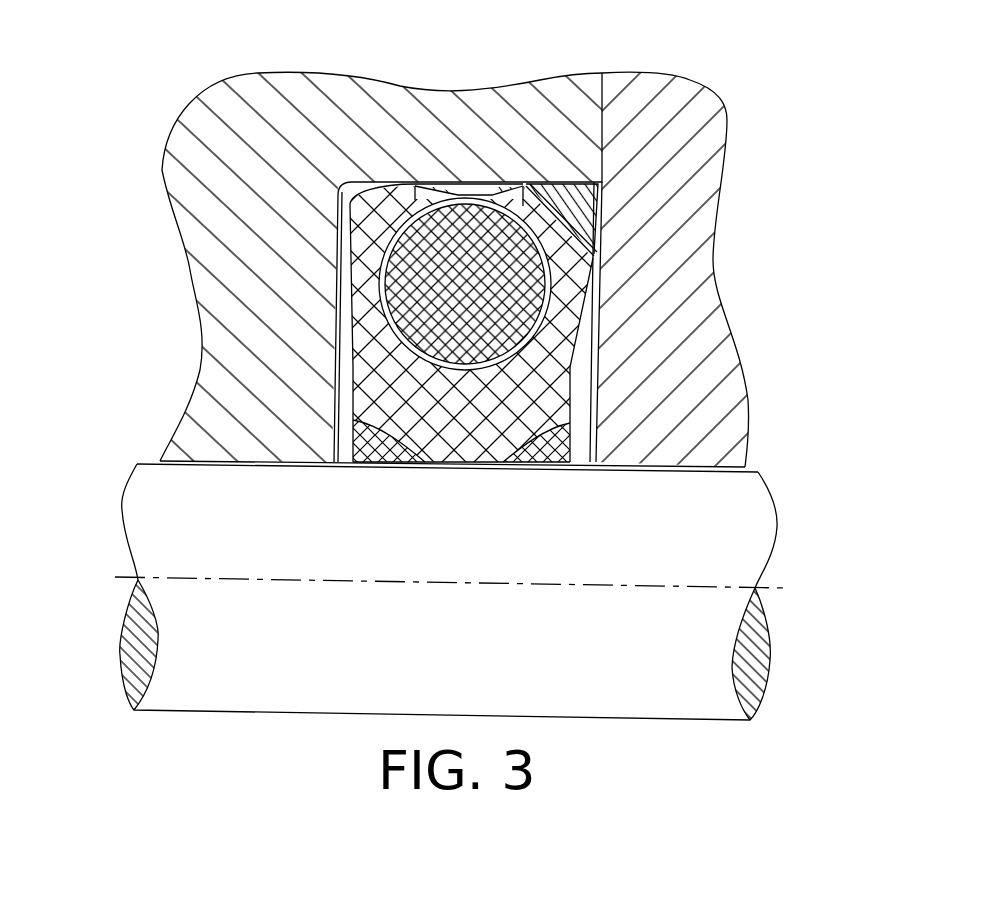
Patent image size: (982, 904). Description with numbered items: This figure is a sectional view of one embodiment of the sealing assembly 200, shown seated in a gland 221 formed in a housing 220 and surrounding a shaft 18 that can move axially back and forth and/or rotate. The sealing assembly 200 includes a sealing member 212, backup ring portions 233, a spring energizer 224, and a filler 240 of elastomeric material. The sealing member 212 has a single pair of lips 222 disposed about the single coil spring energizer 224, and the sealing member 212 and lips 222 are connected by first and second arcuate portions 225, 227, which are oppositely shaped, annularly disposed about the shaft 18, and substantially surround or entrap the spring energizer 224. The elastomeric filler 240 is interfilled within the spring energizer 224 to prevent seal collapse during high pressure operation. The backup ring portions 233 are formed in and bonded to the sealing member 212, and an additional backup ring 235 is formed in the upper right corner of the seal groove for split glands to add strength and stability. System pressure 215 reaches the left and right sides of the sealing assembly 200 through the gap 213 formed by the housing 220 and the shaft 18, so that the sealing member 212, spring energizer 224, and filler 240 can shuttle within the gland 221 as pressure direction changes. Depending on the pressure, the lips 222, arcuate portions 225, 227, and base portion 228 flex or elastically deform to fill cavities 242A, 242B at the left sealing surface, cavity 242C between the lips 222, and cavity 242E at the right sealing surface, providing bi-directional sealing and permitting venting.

The shaft 18 is at (713, 617).
The sealing assembly 200 is at (469, 329).
The sealing member 212 is at (458, 437).
The gap 213 is at (103, 463).
The system pressure 215 is at (115, 461).
The housing 220 is at (722, 357).
The gland 221 is at (353, 195).
The lips 222 is at (402, 182).
The spring energizer 224 is at (595, 307).
The first arcuate portion 225 is at (360, 343).
The second arcuate portion 227 is at (592, 349).
The base portion 228 is at (443, 418).
The backup ring portions 233 is at (368, 461).
The additional backup ring 235 is at (530, 182).
The filler 240 is at (598, 264).
The cavity 242A is at (342, 454).
The cavity 242B is at (340, 227).
The cavity 242C is at (481, 180).
The cavity 242E is at (577, 455).